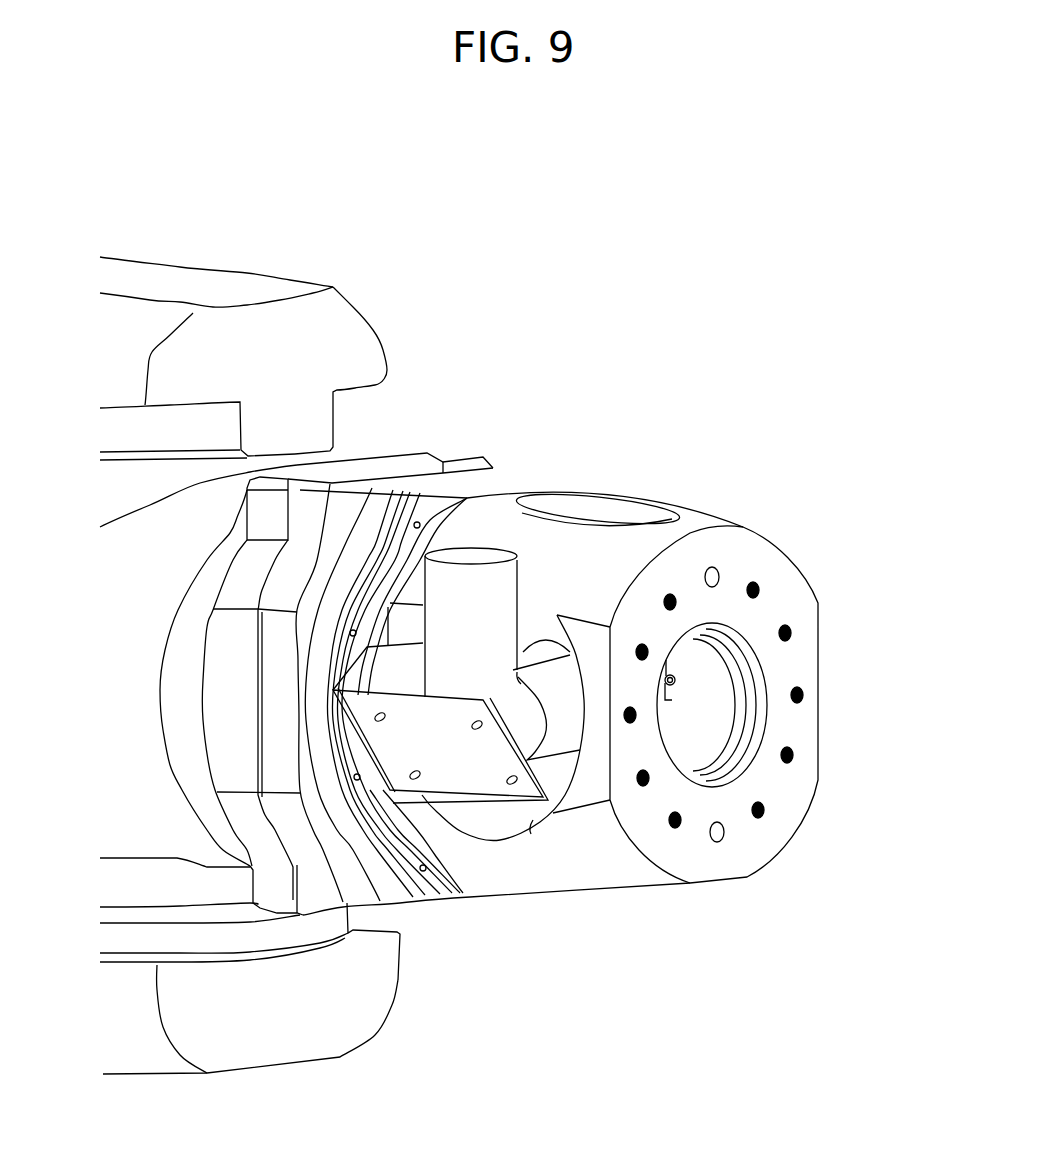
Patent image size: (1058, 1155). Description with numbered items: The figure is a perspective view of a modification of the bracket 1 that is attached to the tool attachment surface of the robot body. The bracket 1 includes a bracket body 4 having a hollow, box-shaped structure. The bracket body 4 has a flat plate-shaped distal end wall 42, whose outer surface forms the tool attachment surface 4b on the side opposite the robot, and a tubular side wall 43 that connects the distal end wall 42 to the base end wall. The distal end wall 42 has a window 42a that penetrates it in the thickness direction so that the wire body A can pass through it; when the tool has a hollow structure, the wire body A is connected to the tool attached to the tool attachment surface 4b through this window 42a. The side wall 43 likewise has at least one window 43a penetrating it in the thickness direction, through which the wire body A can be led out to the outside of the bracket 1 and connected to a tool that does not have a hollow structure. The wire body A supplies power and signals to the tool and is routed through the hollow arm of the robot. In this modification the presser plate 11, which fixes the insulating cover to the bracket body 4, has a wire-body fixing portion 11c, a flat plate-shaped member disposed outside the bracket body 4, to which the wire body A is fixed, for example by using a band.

The bracket 1 is at (622, 330).
The bracket body 4 is at (766, 533).
The tool attachment surface 4b is at (780, 603).
The presser plate 11 is at (332, 691).
The wire-body fixing portion 11c is at (463, 767).
The distal end wall 42 is at (712, 880).
The window 42a is at (760, 705).
The side wall 43 is at (520, 880).
The window 43a is at (647, 513).
The wire body A is at (470, 557).